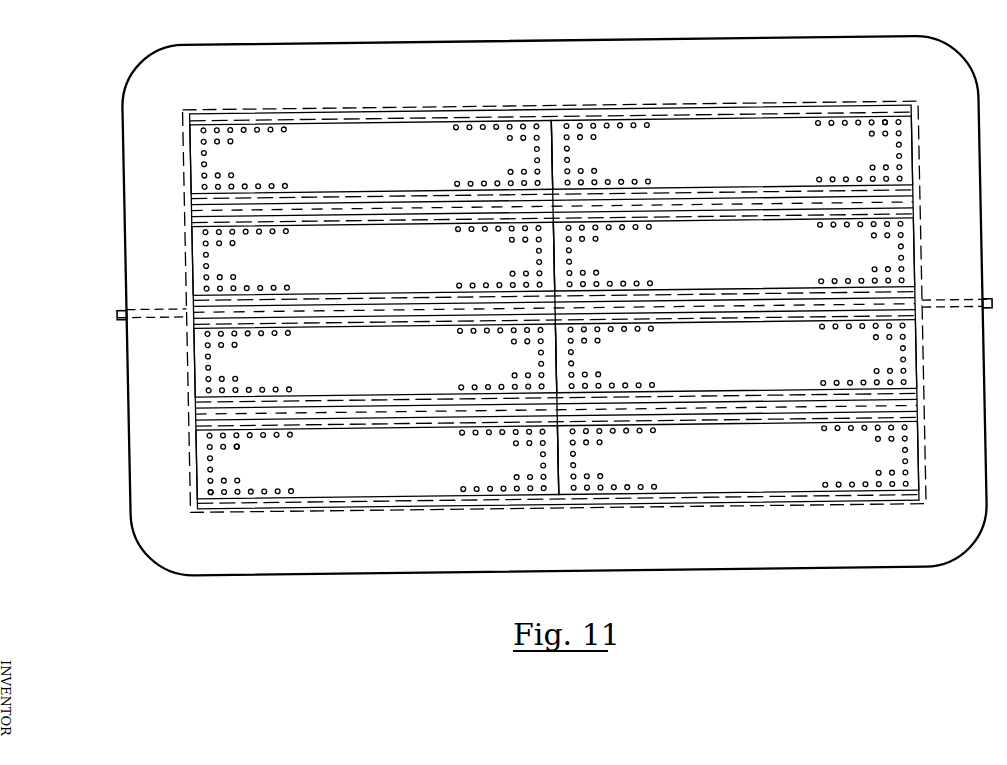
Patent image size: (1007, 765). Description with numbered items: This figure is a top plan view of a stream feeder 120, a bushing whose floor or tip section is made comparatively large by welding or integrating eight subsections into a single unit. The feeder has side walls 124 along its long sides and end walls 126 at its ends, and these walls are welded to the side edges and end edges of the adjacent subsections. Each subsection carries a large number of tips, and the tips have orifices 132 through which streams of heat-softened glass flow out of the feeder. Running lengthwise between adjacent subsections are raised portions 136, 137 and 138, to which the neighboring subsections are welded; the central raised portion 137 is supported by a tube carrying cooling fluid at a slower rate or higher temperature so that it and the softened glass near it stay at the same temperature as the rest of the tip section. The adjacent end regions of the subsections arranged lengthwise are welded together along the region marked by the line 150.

The stream feeder 120 is at (312, 575).
The side walls 124 is at (441, 104).
The end walls 126 is at (187, 464).
The orifices 132 is at (208, 487).
The raised portion 136 is at (298, 411).
The raised portion 137 is at (305, 314).
The raised portion 138 is at (320, 212).
The line 150 is at (558, 124).